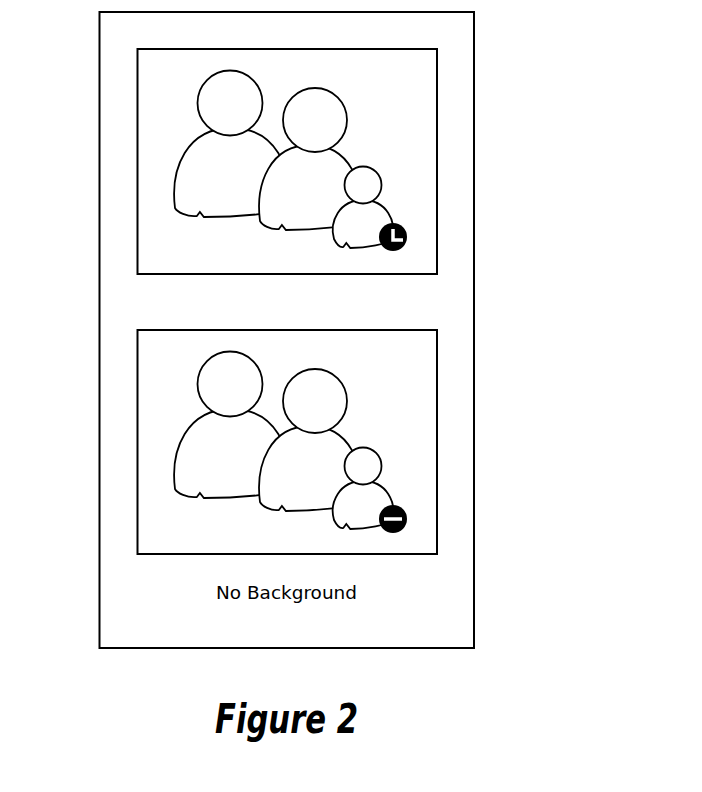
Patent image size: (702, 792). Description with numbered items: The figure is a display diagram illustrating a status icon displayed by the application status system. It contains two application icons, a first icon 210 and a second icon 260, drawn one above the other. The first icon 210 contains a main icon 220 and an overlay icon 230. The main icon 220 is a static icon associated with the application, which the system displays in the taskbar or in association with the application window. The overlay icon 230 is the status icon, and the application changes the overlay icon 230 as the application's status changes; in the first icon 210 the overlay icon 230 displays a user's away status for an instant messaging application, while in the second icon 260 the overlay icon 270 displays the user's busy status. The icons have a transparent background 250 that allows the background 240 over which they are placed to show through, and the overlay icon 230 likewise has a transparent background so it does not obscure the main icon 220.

The first icon 210 is at (288, 151).
The main icon 220 is at (347, 117).
The overlay icon 230 is at (405, 228).
The background 240 is at (465, 30).
The transparent background 250 is at (302, 160).
The second icon 260 is at (288, 432).
The overlay icon 270 is at (405, 510).